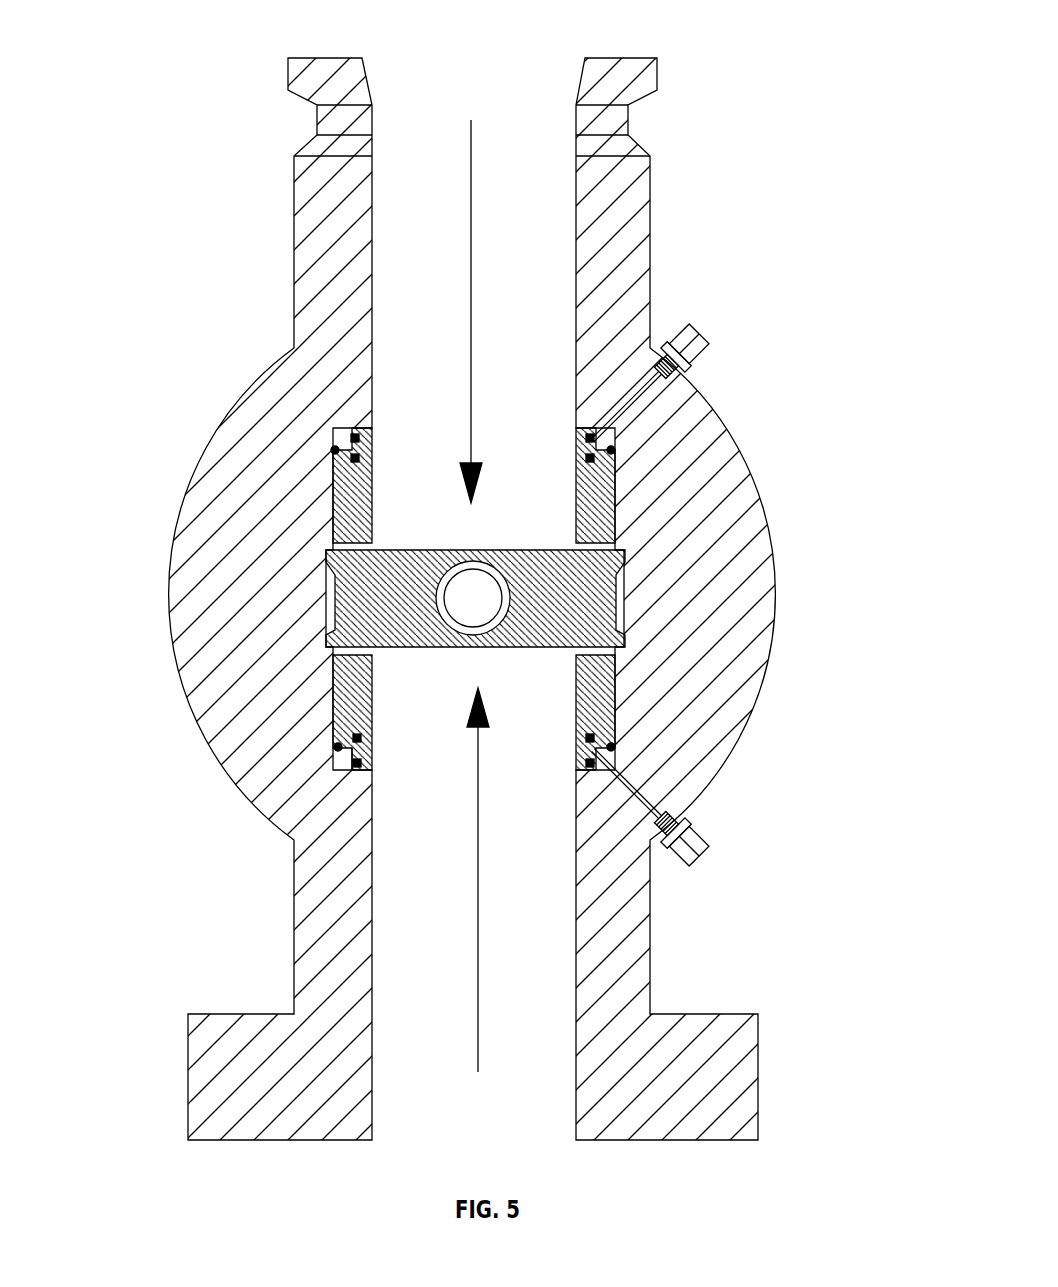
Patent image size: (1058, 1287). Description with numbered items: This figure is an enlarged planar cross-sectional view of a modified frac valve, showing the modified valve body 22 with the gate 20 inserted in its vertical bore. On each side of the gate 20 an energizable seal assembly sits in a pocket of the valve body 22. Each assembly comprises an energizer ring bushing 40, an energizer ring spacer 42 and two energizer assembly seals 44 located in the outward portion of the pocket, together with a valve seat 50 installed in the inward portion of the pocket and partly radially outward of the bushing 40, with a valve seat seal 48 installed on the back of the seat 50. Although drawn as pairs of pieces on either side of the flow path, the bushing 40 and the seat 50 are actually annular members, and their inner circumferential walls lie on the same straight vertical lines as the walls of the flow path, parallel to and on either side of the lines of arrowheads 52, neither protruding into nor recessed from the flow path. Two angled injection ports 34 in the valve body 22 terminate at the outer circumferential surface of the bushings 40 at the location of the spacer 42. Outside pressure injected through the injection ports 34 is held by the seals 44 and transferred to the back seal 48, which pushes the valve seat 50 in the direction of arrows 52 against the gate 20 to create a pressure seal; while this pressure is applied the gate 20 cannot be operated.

The gate 20 is at (630, 582).
The modified valve body 22 is at (767, 399).
The injection port 34 is at (702, 327).
The energizer ring bushing 40 is at (353, 773).
The energizer ring spacer 42 is at (338, 747).
The energizer assembly seals 44 is at (355, 738).
The valve seat seal 48 is at (612, 747).
The valve seat 50 is at (335, 490).
The arrows 52 is at (477, 598).